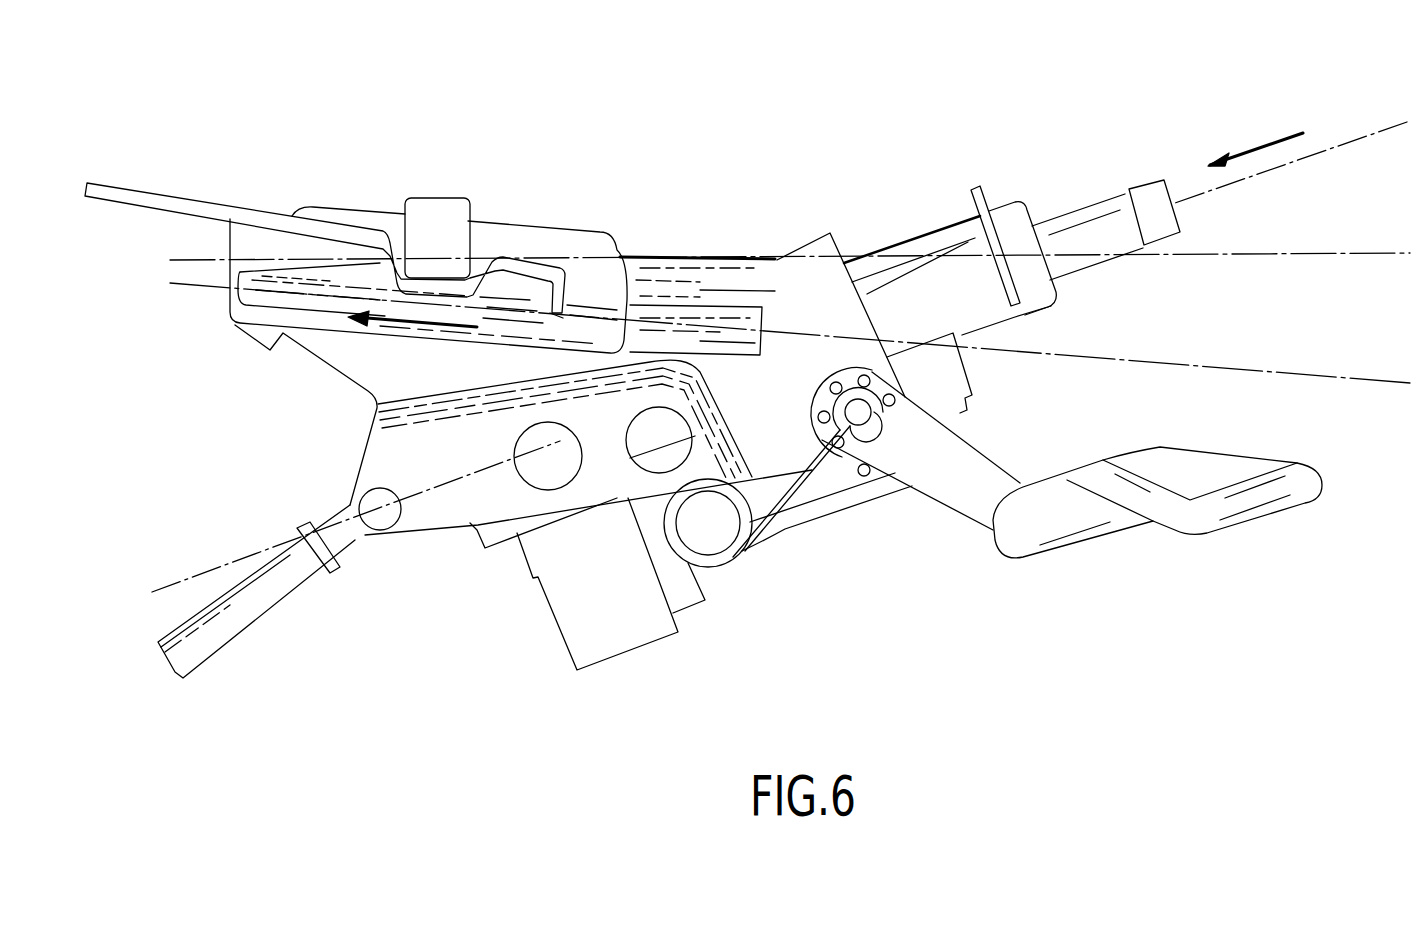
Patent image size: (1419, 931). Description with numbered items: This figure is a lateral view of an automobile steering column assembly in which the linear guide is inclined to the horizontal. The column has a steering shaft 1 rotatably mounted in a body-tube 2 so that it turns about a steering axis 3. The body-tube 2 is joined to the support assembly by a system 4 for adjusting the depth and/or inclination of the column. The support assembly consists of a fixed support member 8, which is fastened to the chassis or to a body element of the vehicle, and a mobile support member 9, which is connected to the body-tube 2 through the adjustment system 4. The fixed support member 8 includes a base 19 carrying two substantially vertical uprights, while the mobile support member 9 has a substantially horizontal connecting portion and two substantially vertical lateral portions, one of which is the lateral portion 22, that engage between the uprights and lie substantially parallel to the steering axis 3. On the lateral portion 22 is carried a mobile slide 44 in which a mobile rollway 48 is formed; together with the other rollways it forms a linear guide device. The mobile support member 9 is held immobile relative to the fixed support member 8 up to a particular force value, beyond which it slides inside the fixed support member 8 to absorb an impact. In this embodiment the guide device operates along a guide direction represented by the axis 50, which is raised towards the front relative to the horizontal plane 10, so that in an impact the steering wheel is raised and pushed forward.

The steering shaft 1 is at (1087, 220).
The body-tube 2 is at (920, 253).
The steering axis 3 is at (1377, 127).
The system for adjusting depth and/or inclination 4 is at (870, 432).
The fixed support member 8 is at (155, 198).
The mobile support member 9 is at (772, 287).
The horizontal plane 10 is at (1337, 253).
The base 19 is at (530, 231).
The lateral portion 22 is at (768, 418).
The mobile slide 44 is at (662, 298).
The mobile rollway 48 is at (717, 320).
The axis 50 is at (1327, 383).